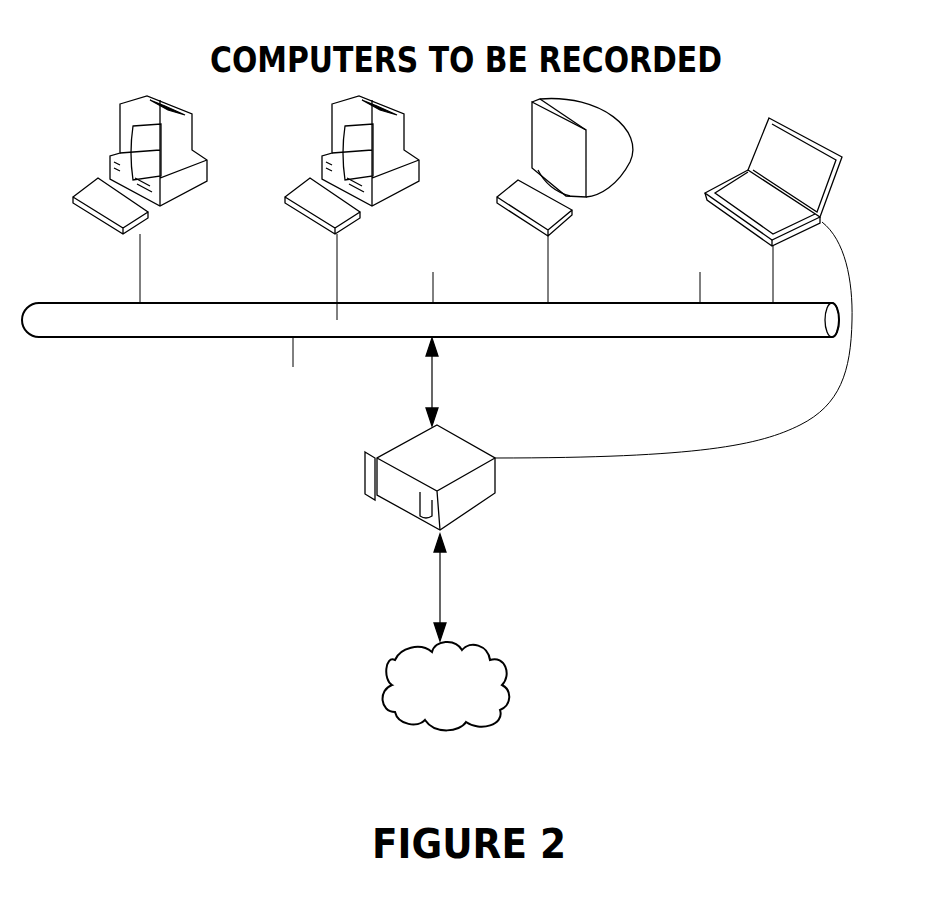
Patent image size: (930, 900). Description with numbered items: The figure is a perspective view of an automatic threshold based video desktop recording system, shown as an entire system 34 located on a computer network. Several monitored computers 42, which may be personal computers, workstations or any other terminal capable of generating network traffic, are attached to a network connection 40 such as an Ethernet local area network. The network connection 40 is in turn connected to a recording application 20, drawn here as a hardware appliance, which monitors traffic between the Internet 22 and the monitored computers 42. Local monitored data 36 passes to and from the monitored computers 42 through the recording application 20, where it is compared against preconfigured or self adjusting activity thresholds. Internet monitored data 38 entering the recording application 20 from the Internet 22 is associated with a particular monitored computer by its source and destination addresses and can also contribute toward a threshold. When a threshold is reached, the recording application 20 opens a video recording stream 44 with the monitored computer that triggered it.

The recording application 20 is at (404, 477).
The Internet 22 is at (600, 671).
The entire system 34 is at (200, 640).
The local monitored data 36 is at (420, 366).
The Internet monitored data 38 is at (530, 587).
The network connection 40 is at (135, 343).
The monitored computers 42 is at (90, 98).
The video recording stream 44 is at (673, 346).